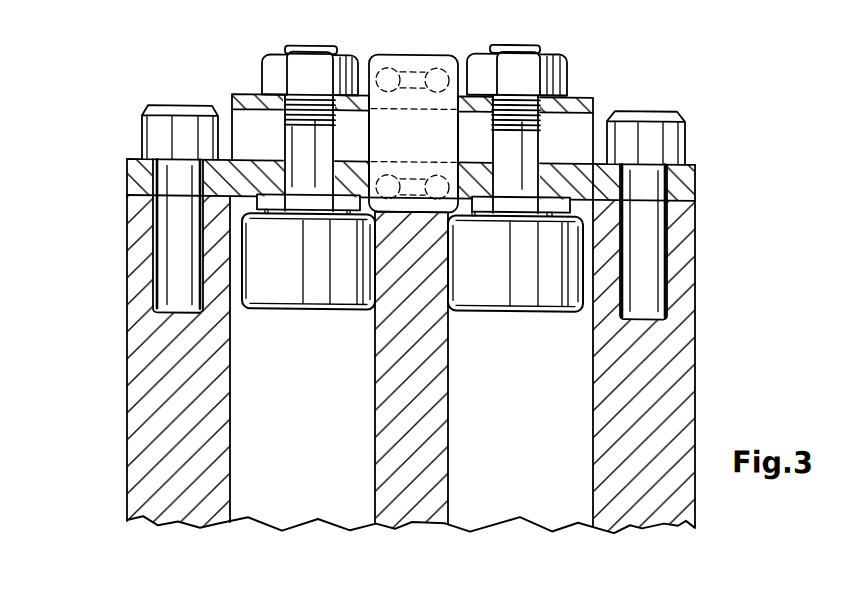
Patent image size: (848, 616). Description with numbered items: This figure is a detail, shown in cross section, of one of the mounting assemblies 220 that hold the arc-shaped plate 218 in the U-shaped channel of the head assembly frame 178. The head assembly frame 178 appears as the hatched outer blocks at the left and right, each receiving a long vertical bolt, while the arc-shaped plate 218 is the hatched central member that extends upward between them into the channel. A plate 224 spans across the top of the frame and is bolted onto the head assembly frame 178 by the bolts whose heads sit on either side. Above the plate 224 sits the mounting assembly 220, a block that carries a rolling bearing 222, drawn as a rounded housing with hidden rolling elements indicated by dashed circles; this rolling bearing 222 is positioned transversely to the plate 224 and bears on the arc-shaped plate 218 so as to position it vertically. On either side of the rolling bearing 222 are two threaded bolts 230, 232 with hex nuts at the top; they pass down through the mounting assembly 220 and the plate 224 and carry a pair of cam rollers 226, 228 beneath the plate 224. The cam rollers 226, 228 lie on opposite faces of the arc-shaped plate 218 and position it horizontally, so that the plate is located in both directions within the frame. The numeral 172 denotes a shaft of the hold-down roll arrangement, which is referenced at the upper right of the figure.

The shaft 172 is at (759, 15).
The head assembly frame 178 is at (142, 433).
The arc-shaped plate 218 is at (415, 489).
The mounting assembly 220 is at (198, 93).
The rolling bearing 222 is at (415, 60).
The plate 224 is at (140, 175).
The cam roller 226 is at (280, 276).
The cam roller 228 is at (498, 278).
The bolt 230 is at (293, 148).
The bolt 232 is at (517, 161).